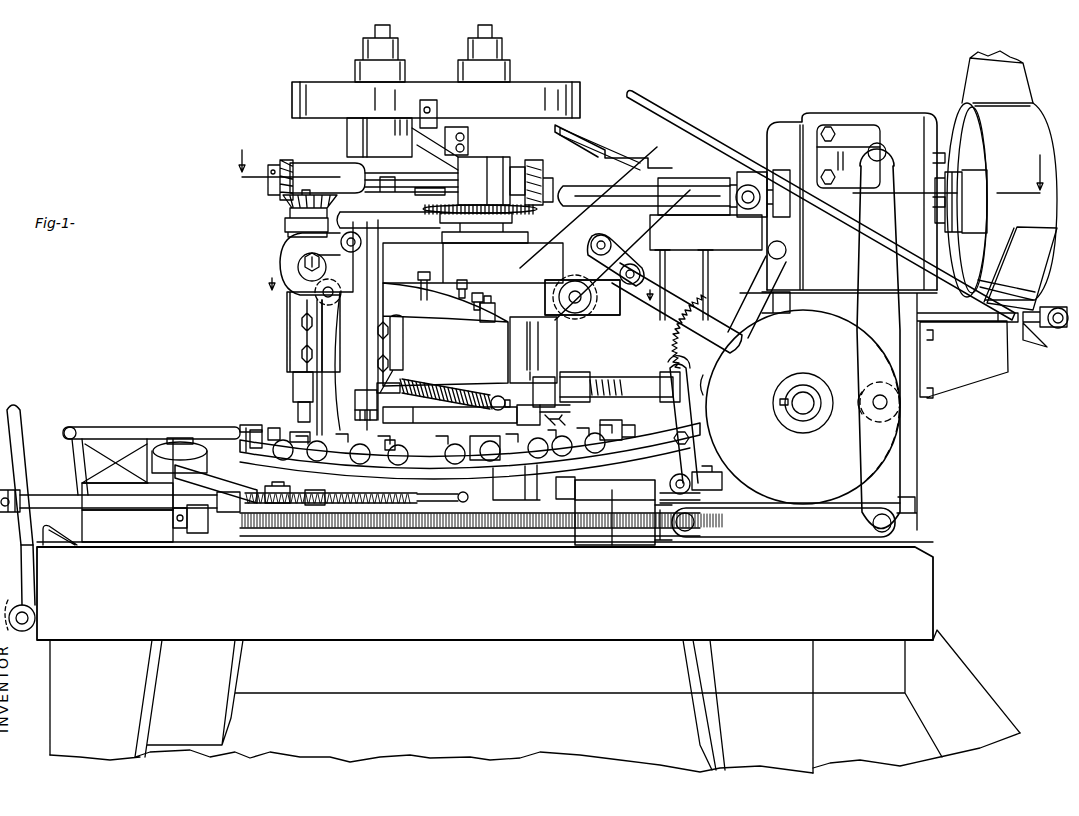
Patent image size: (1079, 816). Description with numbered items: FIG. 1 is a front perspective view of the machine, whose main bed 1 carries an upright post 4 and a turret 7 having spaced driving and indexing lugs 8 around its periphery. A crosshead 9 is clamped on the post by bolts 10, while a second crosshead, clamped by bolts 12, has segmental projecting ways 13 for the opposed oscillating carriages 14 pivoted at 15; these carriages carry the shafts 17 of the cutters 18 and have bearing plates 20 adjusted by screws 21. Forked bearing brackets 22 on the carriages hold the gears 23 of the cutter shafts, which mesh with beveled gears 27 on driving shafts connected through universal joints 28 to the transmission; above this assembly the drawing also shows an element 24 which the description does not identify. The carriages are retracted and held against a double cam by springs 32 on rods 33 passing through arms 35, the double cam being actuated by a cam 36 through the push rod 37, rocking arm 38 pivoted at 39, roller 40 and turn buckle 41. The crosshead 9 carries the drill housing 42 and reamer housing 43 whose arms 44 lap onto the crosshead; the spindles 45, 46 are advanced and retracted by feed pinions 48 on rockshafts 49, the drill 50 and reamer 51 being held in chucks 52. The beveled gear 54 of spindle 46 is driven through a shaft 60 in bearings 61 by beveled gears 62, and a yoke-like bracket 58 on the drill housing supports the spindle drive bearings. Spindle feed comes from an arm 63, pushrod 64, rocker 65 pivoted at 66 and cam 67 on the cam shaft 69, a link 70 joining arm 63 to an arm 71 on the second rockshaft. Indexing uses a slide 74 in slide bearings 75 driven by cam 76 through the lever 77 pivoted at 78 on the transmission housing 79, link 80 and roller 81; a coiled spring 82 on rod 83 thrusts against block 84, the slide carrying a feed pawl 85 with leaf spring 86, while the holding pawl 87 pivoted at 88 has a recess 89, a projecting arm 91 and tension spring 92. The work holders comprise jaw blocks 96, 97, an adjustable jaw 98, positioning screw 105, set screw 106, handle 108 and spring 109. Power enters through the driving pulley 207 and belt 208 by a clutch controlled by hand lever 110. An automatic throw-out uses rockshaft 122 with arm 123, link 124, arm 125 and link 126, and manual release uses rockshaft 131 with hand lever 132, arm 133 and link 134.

The main bed 1 is at (920, 583).
The upright post 4 is at (637, 163).
The turret 7 is at (560, 493).
The driving and indexing lugs 8 is at (566, 482).
The crosshead 9 is at (412, 243).
The bolts 10 is at (348, 265).
The bolts 12 is at (398, 334).
The segmental projecting ways 13 is at (514, 343).
The oscillating carriages 14 is at (418, 292).
The pivot 15 is at (533, 368).
The cutter shafts 17 is at (496, 303).
The cutters 18 is at (366, 405).
The bearing plates 20 is at (452, 319).
The screws 21 is at (477, 292).
The forked bearing brackets 22 is at (433, 130).
The gears 23 is at (332, 214).
The cross bar 24 is at (380, 92).
The beveled gears 27 is at (556, 186).
The universal joints 28 is at (740, 186).
The springs 32 is at (456, 388).
The rods 33 is at (506, 403).
The arms 35 is at (450, 417).
The cam 36 is at (722, 352).
The push rod 37 is at (612, 393).
The rocking arm 38 is at (676, 412).
The pivot 39 is at (672, 480).
The roller 40 is at (666, 368).
The turn buckle 41 is at (580, 376).
The drill housing 42 is at (572, 318).
The reamer housing 43 is at (293, 318).
The arms 44 is at (360, 362).
The drill spindle 45 is at (548, 378).
The spindle 46 is at (293, 374).
The feed pinions 48 is at (341, 291).
The rockshafts 49 is at (568, 292).
The drill 50 is at (566, 406).
The reamer 51 is at (300, 432).
The chucks 52 is at (297, 390).
The beveled gear 54 is at (286, 206).
The yoke-like bracket 58 is at (646, 148).
The shaft 60 is at (380, 167).
The bearings 61 is at (328, 166).
The beveled gears 62 is at (283, 160).
The arm 63 is at (622, 262).
The pushrod 64 is at (680, 296).
The rocker 65 is at (750, 275).
The pivot 66 is at (786, 250).
The cam 67 is at (704, 382).
The cam shaft 69 is at (791, 408).
The link 70 is at (377, 236).
The arm 71 is at (282, 262).
The slide 74 is at (668, 512).
The slide bearings 75 is at (128, 477).
The cam 76 is at (755, 473).
The lever 77 is at (867, 308).
The pivot 78 is at (883, 150).
The transmission housing 79 is at (855, 120).
The link 80 is at (810, 537).
The roller 81 is at (870, 390).
The coiled spring 82 is at (456, 530).
The rod 83 is at (182, 528).
The block 84 is at (222, 512).
The feed pawl 85 is at (313, 505).
The leaf spring 86 is at (407, 503).
The holding pawl 87 is at (228, 465).
The pivot 88 is at (178, 438).
The recess 89 is at (285, 503).
The projecting arm 91 is at (240, 512).
The tension spring 92 is at (355, 503).
The jaw block 96 is at (508, 470).
The jaw block 97 is at (470, 450).
The adjustable jaw 98 is at (488, 458).
The positioning screw 105 is at (265, 425).
The set screw 106 is at (321, 367).
The handle 108 is at (388, 450).
The spring 109 is at (274, 428).
The hand lever 110 is at (667, 112).
The rockshaft 122 is at (30, 618).
The arm 123 is at (24, 580).
The link 124 is at (120, 510).
The arm 125 is at (66, 440).
The link 126 is at (120, 427).
The rockshaft 131 is at (22, 556).
The hand lever 132 is at (24, 440).
The arm 133 is at (78, 439).
The link 134 is at (145, 440).
The driving pulley 207 is at (962, 120).
The belt 208 is at (1014, 240).